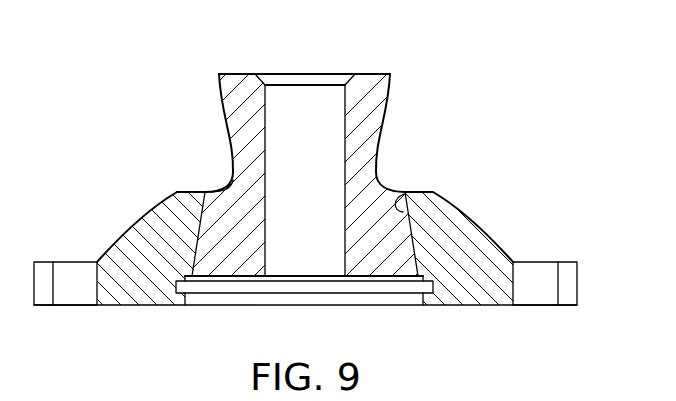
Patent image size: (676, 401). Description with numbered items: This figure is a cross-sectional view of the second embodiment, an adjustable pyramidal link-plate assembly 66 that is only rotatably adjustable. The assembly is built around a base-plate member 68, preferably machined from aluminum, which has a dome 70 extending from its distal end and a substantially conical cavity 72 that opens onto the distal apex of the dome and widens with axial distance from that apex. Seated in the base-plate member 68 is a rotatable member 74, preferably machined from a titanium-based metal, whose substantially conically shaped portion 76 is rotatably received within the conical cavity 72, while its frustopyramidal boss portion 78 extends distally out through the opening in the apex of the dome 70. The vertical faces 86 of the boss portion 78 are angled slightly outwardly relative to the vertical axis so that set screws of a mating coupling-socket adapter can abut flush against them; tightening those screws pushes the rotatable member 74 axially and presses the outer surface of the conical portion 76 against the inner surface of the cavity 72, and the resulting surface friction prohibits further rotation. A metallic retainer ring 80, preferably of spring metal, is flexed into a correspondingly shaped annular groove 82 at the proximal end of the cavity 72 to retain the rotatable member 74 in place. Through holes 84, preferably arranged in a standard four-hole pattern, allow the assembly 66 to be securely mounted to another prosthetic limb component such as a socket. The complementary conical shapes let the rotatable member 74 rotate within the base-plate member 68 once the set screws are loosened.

The adjustable pyramidal link-plate assembly 66 is at (522, 150).
The base-plate member 68 is at (137, 296).
The dome 70 is at (148, 218).
The conical cavity 72 is at (404, 192).
The rotatable member 74 is at (218, 83).
The conically shaped portion 76 is at (222, 200).
The frustopyramidal boss portion 78 is at (372, 94).
The retainer ring 80 is at (209, 287).
The annular groove 82 is at (424, 284).
The through holes 84 is at (70, 270).
The vertical faces 86 is at (222, 110).